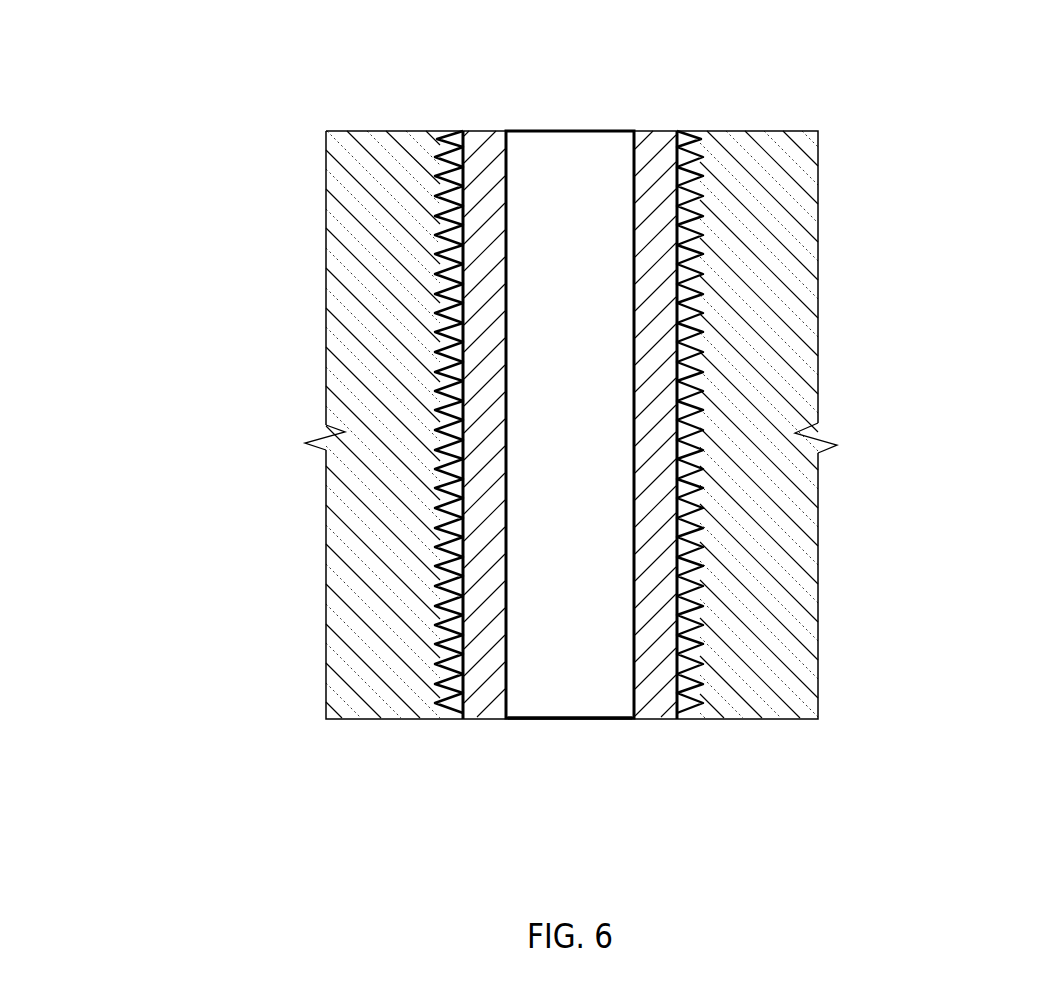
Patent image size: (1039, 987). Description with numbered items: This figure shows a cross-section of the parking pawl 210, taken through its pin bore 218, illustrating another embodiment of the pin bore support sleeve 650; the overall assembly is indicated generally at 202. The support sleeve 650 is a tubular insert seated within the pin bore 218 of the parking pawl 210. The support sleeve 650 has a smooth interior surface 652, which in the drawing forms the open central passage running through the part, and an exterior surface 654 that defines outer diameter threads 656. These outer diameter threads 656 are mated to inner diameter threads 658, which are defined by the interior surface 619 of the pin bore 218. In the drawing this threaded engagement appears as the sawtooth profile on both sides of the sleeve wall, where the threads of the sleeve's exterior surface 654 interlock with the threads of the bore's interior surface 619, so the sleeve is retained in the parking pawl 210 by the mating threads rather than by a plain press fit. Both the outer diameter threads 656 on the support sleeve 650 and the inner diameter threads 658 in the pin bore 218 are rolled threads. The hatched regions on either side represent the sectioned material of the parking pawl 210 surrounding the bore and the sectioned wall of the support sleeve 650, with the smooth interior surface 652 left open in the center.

The coupling assembly 202 is at (224, 315).
The parking pawl 210 is at (370, 192).
The pin bore 218 is at (538, 695).
The interior surface of the pin bore 619 is at (680, 628).
The support sleeve 650 is at (662, 315).
The smooth interior surface 652 is at (508, 290).
The exterior surface 654 is at (434, 149).
The outer diameter threads 656 is at (455, 545).
The inner diameter threads 658 is at (440, 515).